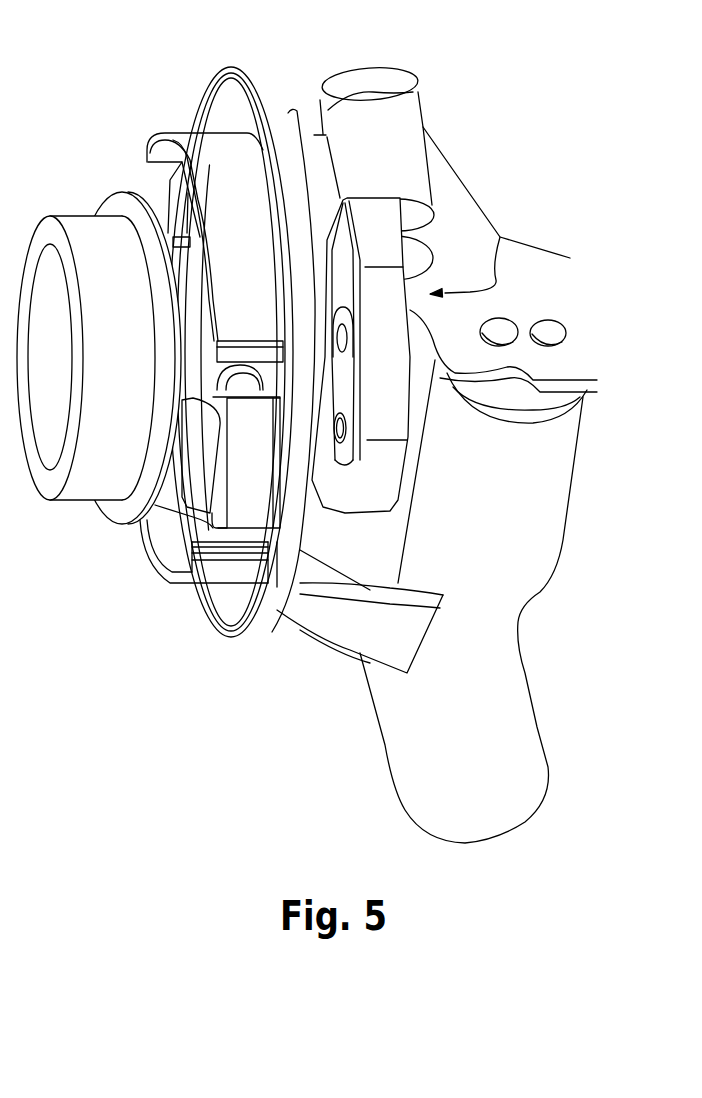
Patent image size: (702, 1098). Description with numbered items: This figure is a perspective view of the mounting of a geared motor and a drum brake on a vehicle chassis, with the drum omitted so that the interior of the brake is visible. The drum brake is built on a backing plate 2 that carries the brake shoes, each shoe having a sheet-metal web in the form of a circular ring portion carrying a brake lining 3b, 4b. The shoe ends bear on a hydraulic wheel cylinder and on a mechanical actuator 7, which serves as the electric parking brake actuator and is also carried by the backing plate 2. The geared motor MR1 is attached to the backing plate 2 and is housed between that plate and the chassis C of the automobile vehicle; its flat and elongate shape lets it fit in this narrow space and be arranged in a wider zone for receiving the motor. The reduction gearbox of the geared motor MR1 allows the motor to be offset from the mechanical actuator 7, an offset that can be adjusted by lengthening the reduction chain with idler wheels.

The backing plate 2 is at (270, 97).
The brake lining 4b is at (203, 157).
The brake lining 3b is at (210, 570).
The mechanical actuator 7 is at (248, 467).
The geared motor MR1 is at (500, 237).
The chassis C is at (497, 700).